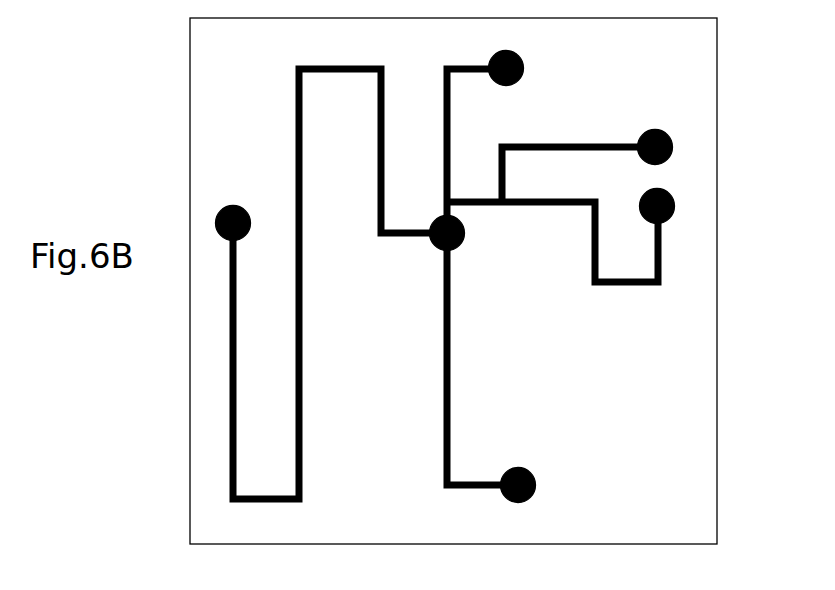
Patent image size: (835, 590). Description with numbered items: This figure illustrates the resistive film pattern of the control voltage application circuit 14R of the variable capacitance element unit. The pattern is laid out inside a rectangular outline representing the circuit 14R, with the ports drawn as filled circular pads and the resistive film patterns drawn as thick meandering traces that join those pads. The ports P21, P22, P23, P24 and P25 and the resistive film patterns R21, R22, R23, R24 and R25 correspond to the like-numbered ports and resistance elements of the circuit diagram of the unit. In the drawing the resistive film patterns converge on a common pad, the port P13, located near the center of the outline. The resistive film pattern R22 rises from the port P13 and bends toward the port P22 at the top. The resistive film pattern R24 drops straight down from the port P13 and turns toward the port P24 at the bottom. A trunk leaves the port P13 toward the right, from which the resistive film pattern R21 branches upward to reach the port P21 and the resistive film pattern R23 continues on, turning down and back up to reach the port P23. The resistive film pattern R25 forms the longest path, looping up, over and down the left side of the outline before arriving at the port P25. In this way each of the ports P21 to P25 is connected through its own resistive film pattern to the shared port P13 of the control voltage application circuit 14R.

The control voltage application circuit 14R is at (797, 46).
The resistive film pattern R25 is at (303, 293).
The resistive film pattern R22 is at (451, 118).
The resistive film pattern R24 is at (452, 348).
The resistive film pattern R23 is at (620, 286).
The resistive film pattern R21 is at (598, 143).
The port P22 is at (528, 68).
The port P21 is at (672, 138).
The port P23 is at (673, 199).
The port P13 is at (467, 239).
The port P25 is at (233, 210).
The port P24 is at (541, 485).